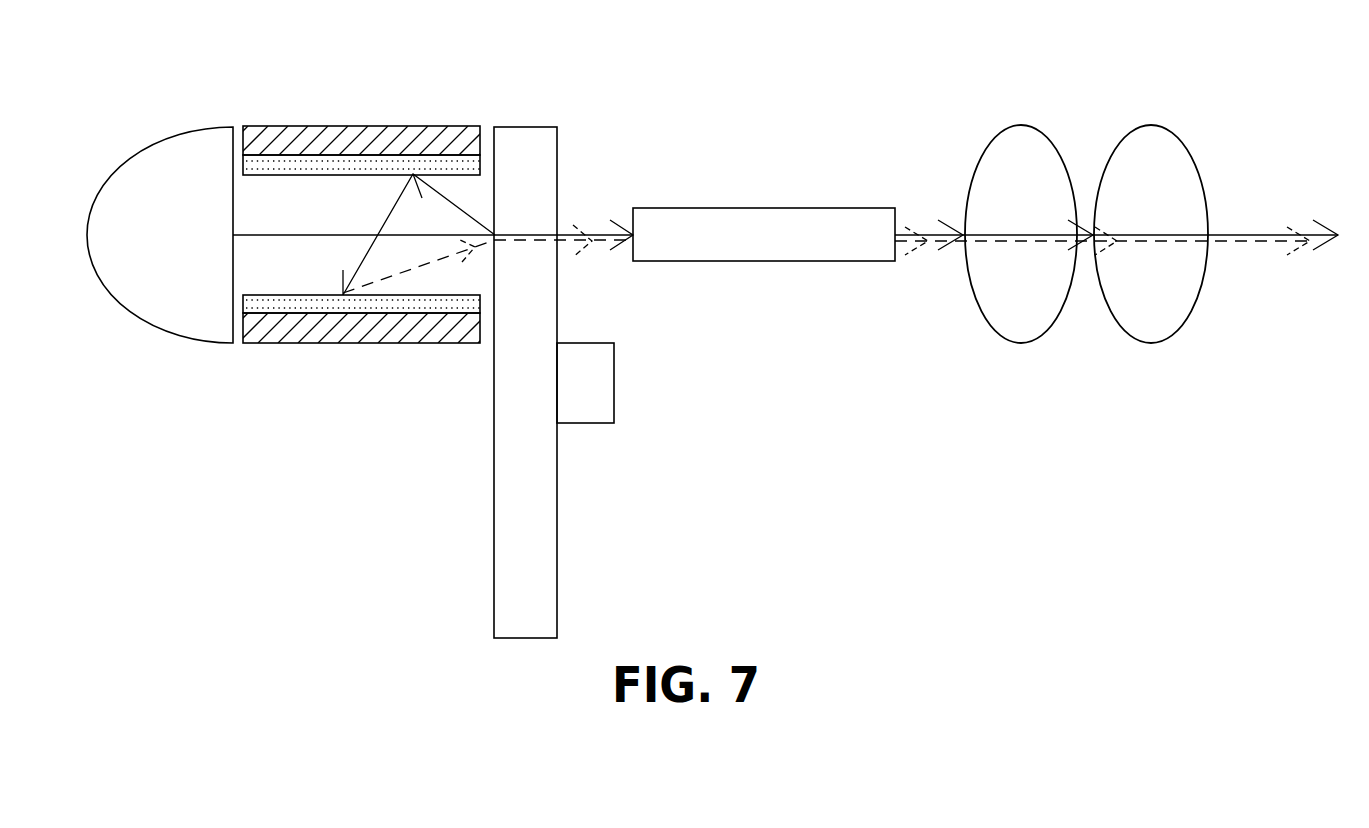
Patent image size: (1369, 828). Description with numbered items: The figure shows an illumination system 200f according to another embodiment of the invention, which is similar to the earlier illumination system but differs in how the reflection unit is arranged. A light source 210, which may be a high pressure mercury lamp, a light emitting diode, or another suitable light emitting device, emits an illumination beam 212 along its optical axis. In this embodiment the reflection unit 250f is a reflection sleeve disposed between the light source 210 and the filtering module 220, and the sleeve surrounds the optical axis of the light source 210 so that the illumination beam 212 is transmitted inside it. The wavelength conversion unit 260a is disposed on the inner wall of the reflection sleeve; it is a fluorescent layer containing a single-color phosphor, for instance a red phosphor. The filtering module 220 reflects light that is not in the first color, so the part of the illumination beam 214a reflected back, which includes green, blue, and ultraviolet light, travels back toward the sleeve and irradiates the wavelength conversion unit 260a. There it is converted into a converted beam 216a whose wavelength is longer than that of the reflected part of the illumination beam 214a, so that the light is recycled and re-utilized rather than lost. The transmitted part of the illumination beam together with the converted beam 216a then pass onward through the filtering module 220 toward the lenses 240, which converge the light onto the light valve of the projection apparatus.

The illumination system 200f is at (1207, 463).
The light source 210 is at (148, 277).
The illumination beam 212 is at (253, 235).
The part of the illumination beam reflected by the filtering unit 214a is at (458, 207).
The converted beam 216a is at (393, 278).
The filtering module 220 is at (527, 560).
The lens 240 is at (1122, 313).
The reflection unit 250f is at (312, 333).
The wavelength conversion unit 260a is at (352, 163).